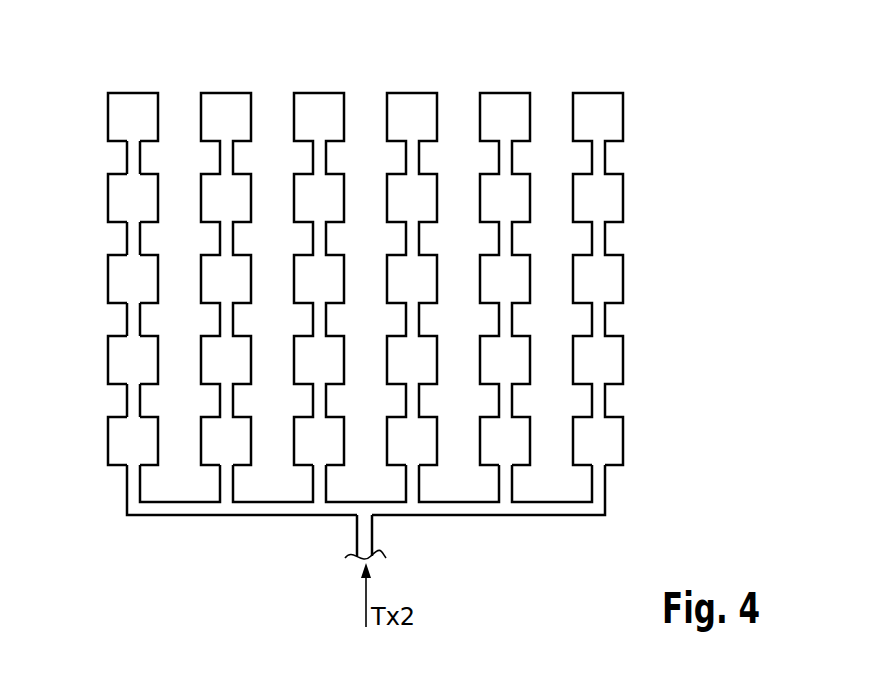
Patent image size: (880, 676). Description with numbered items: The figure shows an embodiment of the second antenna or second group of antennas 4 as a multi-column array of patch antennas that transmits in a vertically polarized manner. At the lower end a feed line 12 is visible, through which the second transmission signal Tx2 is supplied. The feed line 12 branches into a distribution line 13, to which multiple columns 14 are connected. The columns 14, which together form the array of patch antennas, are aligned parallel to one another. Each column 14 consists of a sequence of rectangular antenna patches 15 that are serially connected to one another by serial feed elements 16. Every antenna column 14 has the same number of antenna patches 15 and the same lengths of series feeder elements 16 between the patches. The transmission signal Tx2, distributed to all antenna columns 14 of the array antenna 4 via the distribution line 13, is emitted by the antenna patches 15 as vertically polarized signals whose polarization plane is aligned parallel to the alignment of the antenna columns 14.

The second antenna 4 is at (380, 286).
The feed line 12 is at (373, 540).
The distribution line 13 is at (264, 516).
The column 14 is at (132, 66).
The antenna patch 15 is at (108, 279).
The serial feed element 16 is at (127, 319).